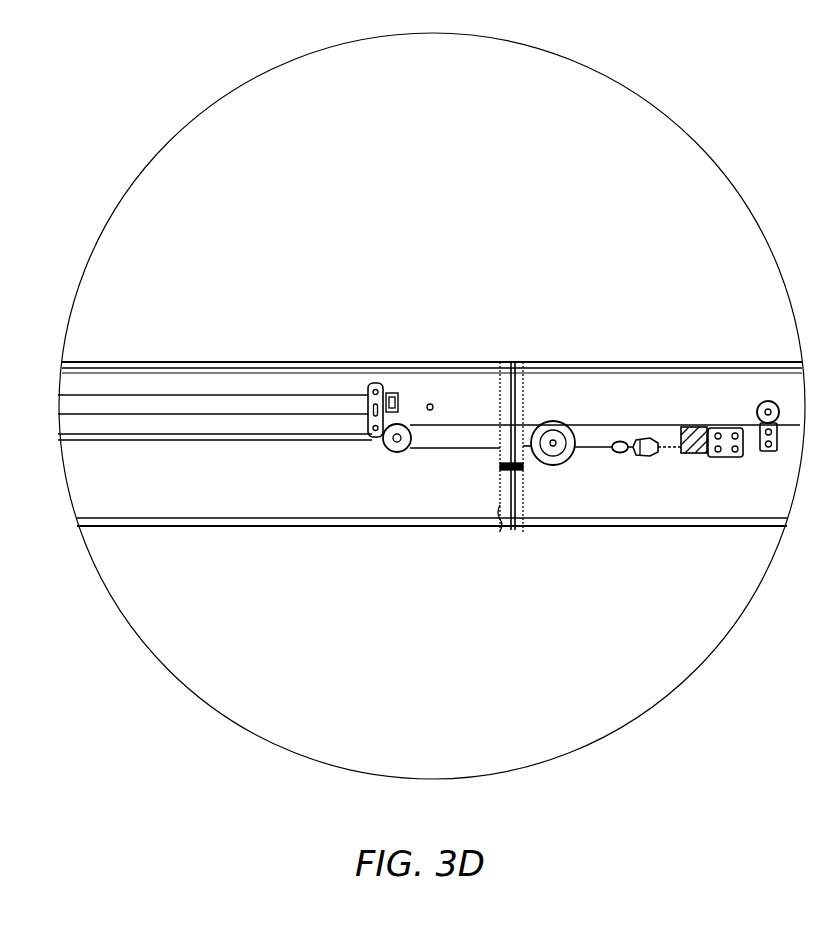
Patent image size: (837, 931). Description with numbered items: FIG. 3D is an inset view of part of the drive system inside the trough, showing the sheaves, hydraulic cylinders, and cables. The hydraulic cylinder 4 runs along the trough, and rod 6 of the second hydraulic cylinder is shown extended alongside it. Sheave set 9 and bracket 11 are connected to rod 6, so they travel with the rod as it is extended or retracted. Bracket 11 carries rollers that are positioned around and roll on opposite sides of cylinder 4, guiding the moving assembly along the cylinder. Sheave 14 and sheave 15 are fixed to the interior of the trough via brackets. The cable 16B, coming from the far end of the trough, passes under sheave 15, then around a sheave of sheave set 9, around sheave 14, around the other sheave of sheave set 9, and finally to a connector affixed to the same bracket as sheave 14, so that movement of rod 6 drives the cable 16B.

The hydraulic cylinder 4 is at (290, 405).
The rod 6 is at (257, 437).
The sheave set 9 is at (395, 455).
The bracket 11 is at (380, 385).
The sheave 14 is at (693, 427).
The sheave 15 is at (767, 402).
The cable 16B is at (450, 367).